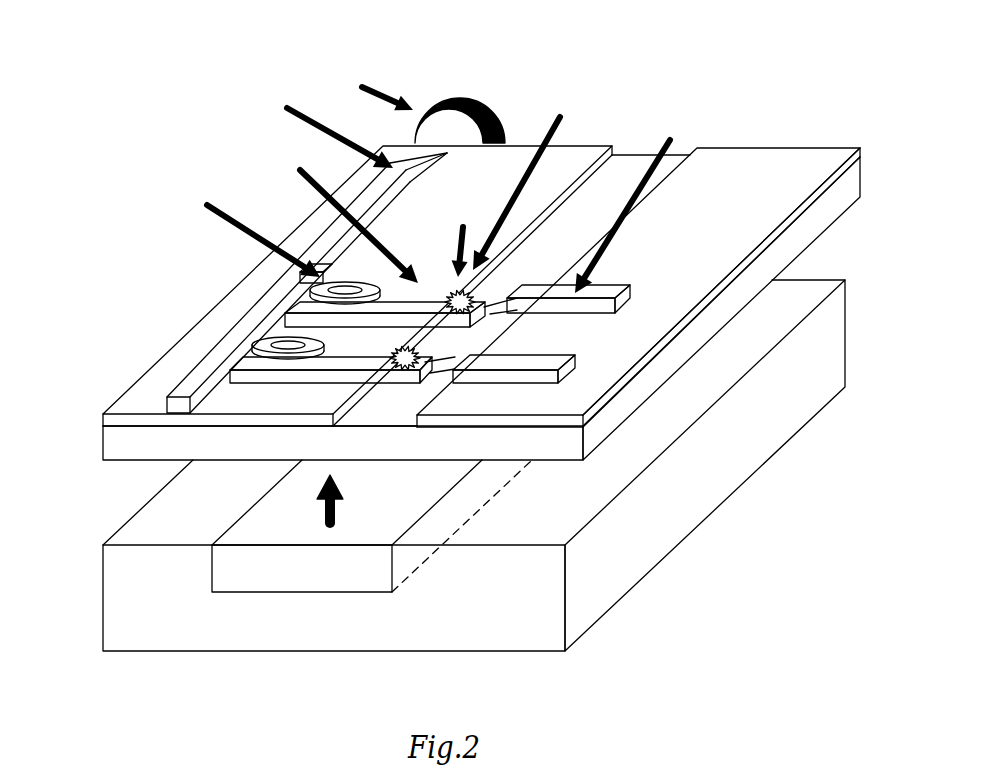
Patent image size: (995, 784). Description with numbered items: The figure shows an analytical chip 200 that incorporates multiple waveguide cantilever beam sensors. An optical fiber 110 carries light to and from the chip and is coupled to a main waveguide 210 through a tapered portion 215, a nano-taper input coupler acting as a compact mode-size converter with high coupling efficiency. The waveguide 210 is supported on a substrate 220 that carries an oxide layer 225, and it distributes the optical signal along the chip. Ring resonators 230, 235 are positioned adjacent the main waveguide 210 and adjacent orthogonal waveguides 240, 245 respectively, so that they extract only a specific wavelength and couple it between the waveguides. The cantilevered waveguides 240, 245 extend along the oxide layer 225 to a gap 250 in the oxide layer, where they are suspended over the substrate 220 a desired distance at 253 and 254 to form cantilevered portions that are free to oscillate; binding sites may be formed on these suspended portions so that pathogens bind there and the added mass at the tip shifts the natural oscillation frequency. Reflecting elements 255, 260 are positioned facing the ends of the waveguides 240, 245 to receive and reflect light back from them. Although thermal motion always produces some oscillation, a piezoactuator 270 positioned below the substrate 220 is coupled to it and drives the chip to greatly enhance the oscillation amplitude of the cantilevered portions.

The analytical chip 200 is at (127, 33).
The optical fiber 110 is at (472, 96).
The waveguide 210 is at (203, 370).
The tapered portion 215 is at (401, 185).
The substrate 220 is at (806, 232).
The oxide layer 225 is at (822, 202).
The ring resonator 230 is at (263, 340).
The ring resonator 235 is at (352, 282).
The cantilevered waveguide 240 is at (265, 380).
The cantilevered waveguide 245 is at (300, 302).
The gap 250 is at (376, 413).
The suspended portion 253 is at (400, 377).
The suspended portion 254 is at (477, 300).
The reflecting element 255 is at (510, 378).
The reflecting element 260 is at (592, 307).
The piezoactuator 270 is at (227, 580).